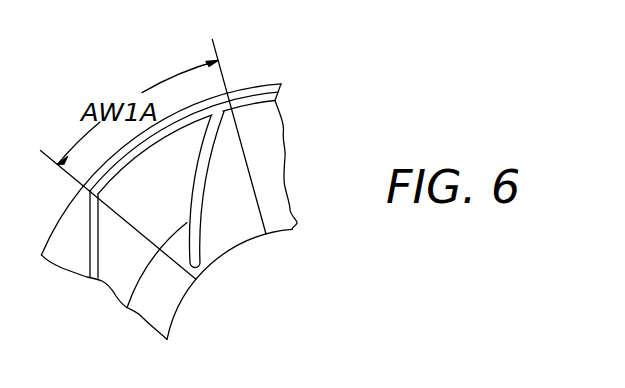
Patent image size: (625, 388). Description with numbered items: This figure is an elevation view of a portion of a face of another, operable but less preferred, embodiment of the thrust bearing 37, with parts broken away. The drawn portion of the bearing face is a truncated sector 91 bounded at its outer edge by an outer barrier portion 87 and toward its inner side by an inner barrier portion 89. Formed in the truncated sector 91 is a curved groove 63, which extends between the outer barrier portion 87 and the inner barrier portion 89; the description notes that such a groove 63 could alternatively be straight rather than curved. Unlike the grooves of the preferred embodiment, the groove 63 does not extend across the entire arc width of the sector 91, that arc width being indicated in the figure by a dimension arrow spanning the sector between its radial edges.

The bearing 37 is at (257, 86).
The outer barrier portion 87 is at (268, 88).
The inner barrier portion 89 is at (207, 268).
The truncated sector 91 is at (232, 225).
The curved groove 63 is at (128, 308).